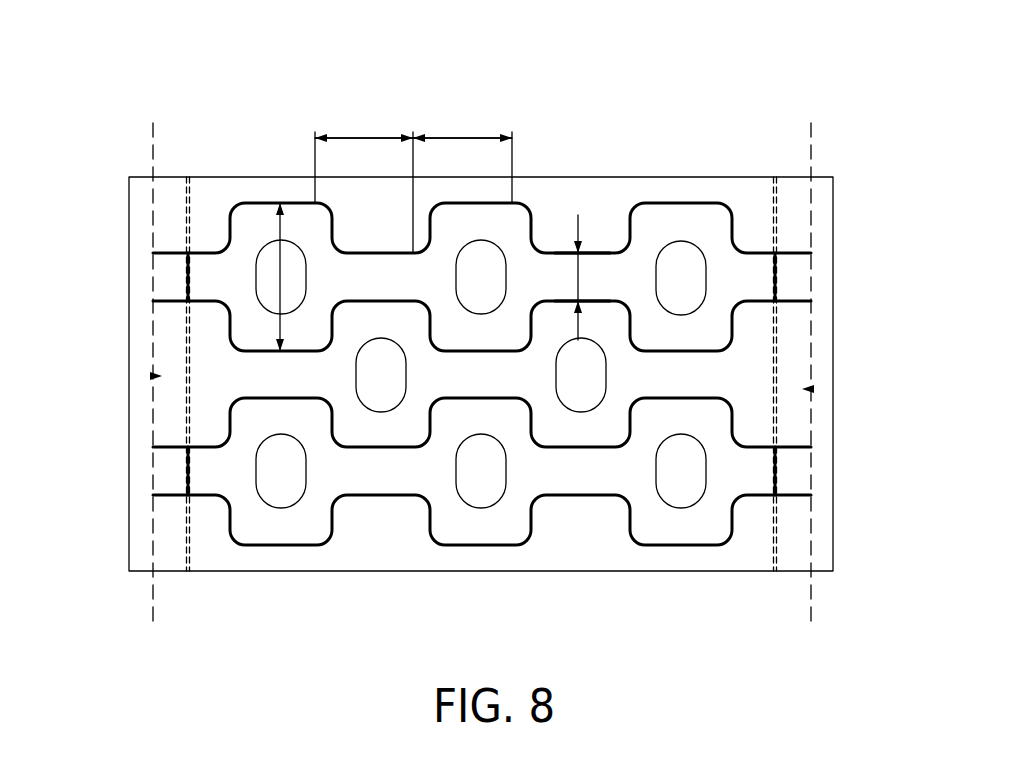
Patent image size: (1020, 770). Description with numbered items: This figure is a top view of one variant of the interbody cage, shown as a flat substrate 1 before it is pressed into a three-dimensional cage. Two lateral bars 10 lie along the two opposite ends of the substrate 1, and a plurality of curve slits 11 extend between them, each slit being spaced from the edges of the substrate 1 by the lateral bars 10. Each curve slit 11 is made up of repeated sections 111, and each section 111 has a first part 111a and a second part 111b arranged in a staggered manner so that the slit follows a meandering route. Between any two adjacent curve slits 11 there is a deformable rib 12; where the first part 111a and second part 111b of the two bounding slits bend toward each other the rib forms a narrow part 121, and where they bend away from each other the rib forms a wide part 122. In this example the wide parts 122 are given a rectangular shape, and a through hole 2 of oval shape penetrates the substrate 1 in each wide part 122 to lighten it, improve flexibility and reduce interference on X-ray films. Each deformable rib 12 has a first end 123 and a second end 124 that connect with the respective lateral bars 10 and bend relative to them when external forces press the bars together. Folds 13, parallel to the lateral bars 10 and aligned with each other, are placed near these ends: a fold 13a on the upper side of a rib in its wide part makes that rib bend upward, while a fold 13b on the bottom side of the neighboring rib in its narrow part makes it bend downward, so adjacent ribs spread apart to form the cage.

The substrate 1 is at (755, 183).
The through hole 2 is at (687, 270).
The lateral bar 10 is at (822, 230).
The curve slit 11 is at (673, 203).
The deformable rib 12 is at (600, 275).
The section 111 is at (413, 130).
The first part 111a is at (372, 138).
The second part 111b is at (462, 103).
The narrow part 121 is at (578, 278).
The wide part 122 is at (277, 273).
The first end 123 is at (152, 376).
The second end 124 is at (812, 389).
The fold 13 is at (455, 464).
The fold 13a is at (188, 465).
The fold 13b is at (182, 538).